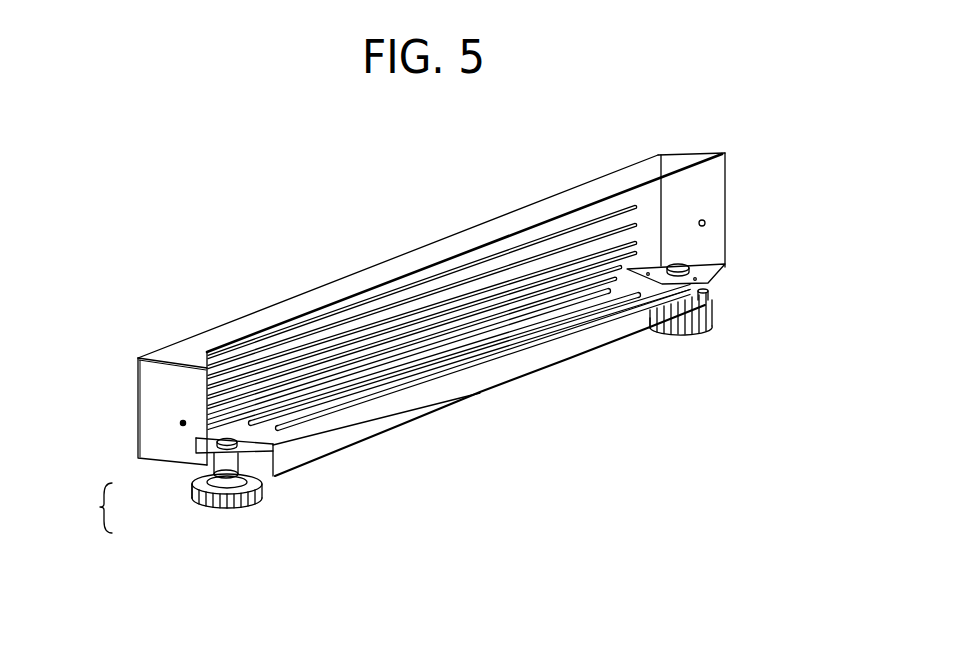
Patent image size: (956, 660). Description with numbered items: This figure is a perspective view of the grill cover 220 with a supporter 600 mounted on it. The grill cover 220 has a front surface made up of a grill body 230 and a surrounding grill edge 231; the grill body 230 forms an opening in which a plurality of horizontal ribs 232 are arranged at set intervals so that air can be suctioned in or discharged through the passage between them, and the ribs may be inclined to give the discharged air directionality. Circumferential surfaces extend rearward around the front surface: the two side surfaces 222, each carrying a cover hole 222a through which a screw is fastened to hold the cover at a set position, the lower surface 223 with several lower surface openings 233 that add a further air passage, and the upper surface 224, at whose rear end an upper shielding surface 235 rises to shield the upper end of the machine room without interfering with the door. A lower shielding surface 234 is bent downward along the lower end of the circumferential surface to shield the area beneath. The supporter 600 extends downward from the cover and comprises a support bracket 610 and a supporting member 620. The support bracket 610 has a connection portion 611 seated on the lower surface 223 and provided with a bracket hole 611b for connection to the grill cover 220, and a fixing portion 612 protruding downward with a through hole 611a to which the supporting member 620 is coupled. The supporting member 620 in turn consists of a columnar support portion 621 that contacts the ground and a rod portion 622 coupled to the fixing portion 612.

The grill cover 220 is at (400, 220).
The side surface 222 is at (150, 440).
The cover hole 222a is at (181, 423).
The lower surface 223 is at (323, 405).
The upper surface 224 is at (322, 300).
The grill body 230 is at (578, 240).
The grill edge 231 is at (650, 222).
The horizontal ribs 232 is at (612, 212).
The lower surface openings 233 is at (580, 297).
The lower shielding surface 234 is at (452, 397).
The upper shielding surface 235 is at (472, 252).
The supporter 600 is at (218, 532).
The support bracket 610 is at (91, 508).
The connection portion 611 is at (205, 447).
The through hole 611a is at (703, 302).
The bracket hole 611b is at (694, 258).
The fixing portion 612 is at (220, 463).
The supporting member 620 is at (248, 557).
The support portion 621 is at (262, 492).
The rod portion 622 is at (239, 498).